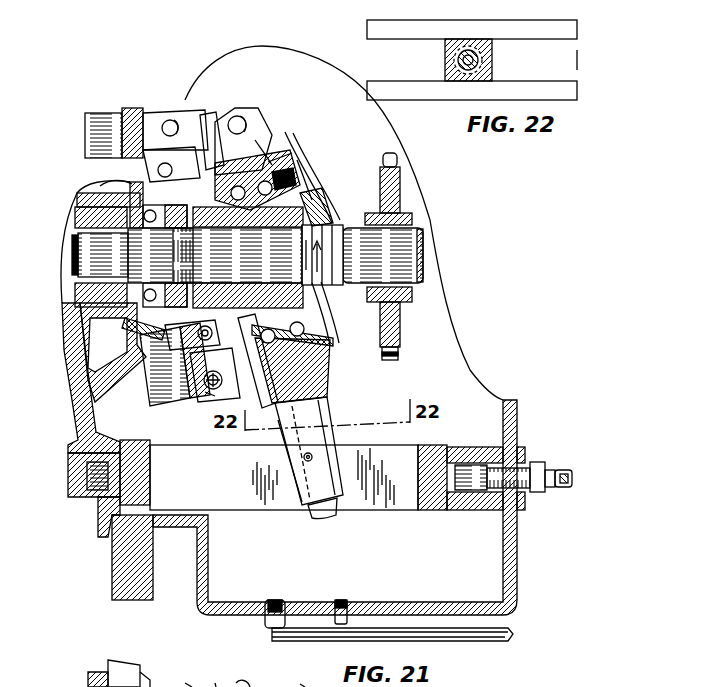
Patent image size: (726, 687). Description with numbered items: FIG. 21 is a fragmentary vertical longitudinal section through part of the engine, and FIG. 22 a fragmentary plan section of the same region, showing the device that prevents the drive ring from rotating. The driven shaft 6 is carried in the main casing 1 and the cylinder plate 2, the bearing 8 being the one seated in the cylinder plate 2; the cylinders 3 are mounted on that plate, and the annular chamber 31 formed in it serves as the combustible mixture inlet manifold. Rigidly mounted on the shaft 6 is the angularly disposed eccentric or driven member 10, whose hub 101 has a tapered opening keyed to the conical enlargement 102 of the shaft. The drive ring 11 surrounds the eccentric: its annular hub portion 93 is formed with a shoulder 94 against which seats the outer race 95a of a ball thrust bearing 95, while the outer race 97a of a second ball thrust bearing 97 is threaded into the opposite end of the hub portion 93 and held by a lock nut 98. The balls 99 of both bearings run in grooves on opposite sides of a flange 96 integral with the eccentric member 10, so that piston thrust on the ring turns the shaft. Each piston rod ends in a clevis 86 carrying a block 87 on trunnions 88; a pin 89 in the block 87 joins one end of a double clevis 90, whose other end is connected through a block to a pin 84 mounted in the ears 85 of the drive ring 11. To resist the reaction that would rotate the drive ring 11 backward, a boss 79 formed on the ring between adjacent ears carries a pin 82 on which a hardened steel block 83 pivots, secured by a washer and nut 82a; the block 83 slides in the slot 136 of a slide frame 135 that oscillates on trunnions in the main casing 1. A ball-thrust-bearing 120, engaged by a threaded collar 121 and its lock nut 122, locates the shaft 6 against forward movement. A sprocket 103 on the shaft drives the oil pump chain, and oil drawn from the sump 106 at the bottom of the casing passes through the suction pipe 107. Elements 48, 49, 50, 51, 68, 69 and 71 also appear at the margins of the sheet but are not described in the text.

In FIG. 21, the main casing 1 is at (513, 418).
In FIG. 21, the cylinder plate 2 is at (77, 410).
In FIG. 21, the cylinders 3 is at (45, 686).
In FIG. 21, the driven shaft 6 is at (425, 255).
In FIG. 21, the bearing 8 is at (72, 290).
In FIG. 21, the eccentric or driven member 10 is at (318, 200).
In FIG. 21, the drive ring 11 is at (280, 192).
In FIG. 21, the chamber 31 is at (92, 338).
In FIG. 21, the lever 48 is at (192, 686).
In FIG. 21, the link 49 is at (265, 686).
In FIG. 21, the pin 50 is at (216, 686).
In FIG. 21, the spring 51 is at (294, 679).
In FIG. 21, the bracket 68 is at (76, 686).
In FIG. 21, the support 69 is at (82, 686).
In FIG. 21, the servo cylinder 71 is at (88, 113).
In FIG. 21, the boss 79 is at (330, 404).
In FIG. 21, the pin 82 is at (298, 480).
In FIG. 22, the pin 82 is at (470, 46).
In FIG. 21, the washer and nut 82a is at (322, 518).
In FIG. 22, the washer and nut 82a is at (492, 60).
In FIG. 21, the hardened steel block 83 is at (295, 500).
In FIG. 22, the hardened steel block 83 is at (445, 53).
In FIG. 21, the pin 84 is at (240, 120).
In FIG. 21, the ears 85 is at (258, 138).
In FIG. 21, the clevis 86 is at (133, 108).
In FIG. 21, the block 87 is at (155, 113).
In FIG. 21, the trunnions 88 is at (112, 182).
In FIG. 21, the pin 89 is at (172, 120).
In FIG. 21, the double clevis 90 is at (208, 118).
In FIG. 21, the annular hub portion 93 is at (330, 345).
In FIG. 21, the shoulder 94 is at (215, 389).
In FIG. 21, the ball thrust bearing 95 is at (257, 177).
In FIG. 21, the outer race 95a is at (263, 166).
In FIG. 21, the flange 96 is at (274, 160).
In FIG. 21, the second ball thrust bearing 97 is at (286, 170).
In FIG. 21, the outer race 97a is at (296, 180).
In FIG. 21, the lock nut 98 is at (302, 190).
In FIG. 21, the balls 99 is at (322, 320).
In FIG. 21, the hub 101 is at (310, 212).
In FIG. 21, the conical enlargement 102 is at (290, 242).
In FIG. 21, the sprocket 103 is at (400, 318).
In FIG. 21, the sump 106 is at (490, 575).
In FIG. 21, the suction pipe 107 is at (475, 641).
In FIG. 21, the ball-thrust-bearing 120 is at (150, 212).
In FIG. 21, the threaded collar 121 is at (142, 330).
In FIG. 21, the lock nut 122 is at (188, 335).
In FIG. 21, the slide frame 135 is at (432, 510).
In FIG. 22, the slide frame 135 is at (577, 32).
In FIG. 21, the slot 136 is at (386, 500).
In FIG. 22, the slot 136 is at (579, 42).